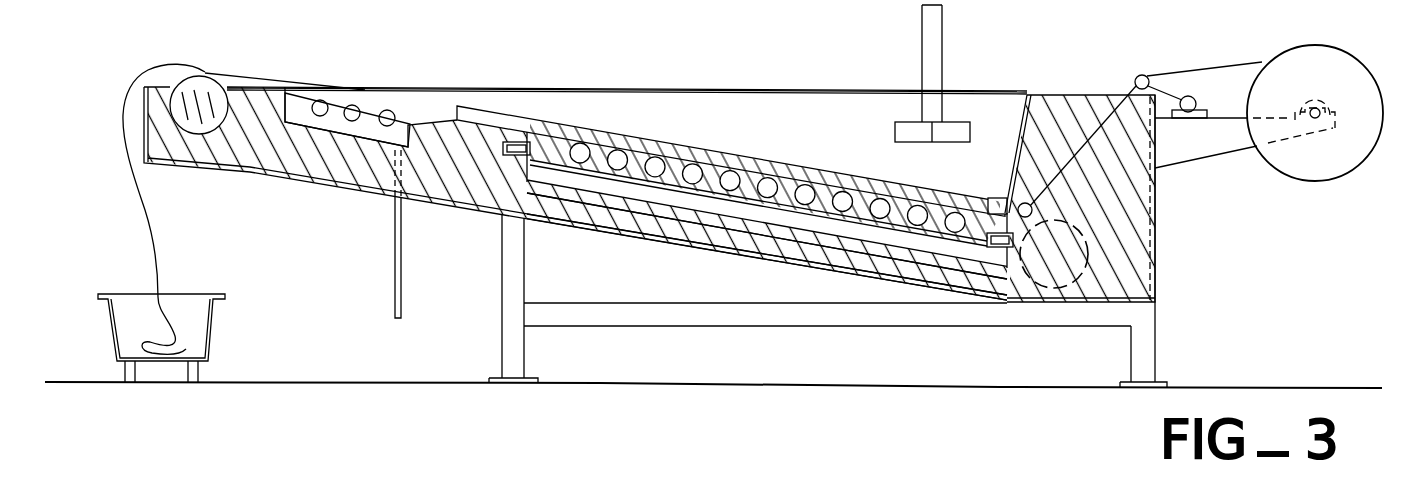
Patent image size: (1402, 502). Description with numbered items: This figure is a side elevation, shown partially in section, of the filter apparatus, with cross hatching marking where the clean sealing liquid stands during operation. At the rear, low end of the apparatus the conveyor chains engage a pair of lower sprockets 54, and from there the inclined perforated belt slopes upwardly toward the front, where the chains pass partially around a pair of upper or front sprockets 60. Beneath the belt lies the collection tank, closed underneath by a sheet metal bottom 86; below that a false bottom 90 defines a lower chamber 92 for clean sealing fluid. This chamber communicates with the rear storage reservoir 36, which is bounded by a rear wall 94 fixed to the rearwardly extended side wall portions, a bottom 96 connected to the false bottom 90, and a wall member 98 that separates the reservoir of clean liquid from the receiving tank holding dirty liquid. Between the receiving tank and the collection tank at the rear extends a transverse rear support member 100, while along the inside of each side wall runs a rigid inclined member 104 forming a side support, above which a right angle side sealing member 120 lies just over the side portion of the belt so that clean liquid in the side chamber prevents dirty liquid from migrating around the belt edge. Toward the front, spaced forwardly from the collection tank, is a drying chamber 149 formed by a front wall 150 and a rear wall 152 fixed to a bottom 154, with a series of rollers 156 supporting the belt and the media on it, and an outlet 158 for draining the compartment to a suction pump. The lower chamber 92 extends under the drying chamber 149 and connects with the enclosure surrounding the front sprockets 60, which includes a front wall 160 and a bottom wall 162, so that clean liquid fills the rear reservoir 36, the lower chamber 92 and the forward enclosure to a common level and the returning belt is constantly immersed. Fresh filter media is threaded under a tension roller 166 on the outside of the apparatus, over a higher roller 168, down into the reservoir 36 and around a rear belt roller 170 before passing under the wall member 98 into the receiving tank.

The rear storage reservoir 36 is at (1053, 120).
The lower sprockets 54 is at (1045, 235).
The upper or front sprockets 60 is at (208, 72).
The sheet metal bottom 86 is at (785, 233).
The false bottom 90 is at (712, 240).
The lower chamber 92 is at (642, 228).
The rear wall 94 is at (1157, 207).
The bottom 96 is at (1093, 305).
The wall member 98 is at (1017, 97).
The transverse rear support member 100 is at (932, 95).
The rigid inclined member 104 is at (600, 160).
The right angle side sealing members 120 is at (723, 162).
The drying chamber 149 is at (337, 107).
The front wall 150 is at (286, 105).
The rear wall 152 is at (627, 61).
The bottom 154 is at (363, 140).
The rollers 156 is at (320, 118).
The outlet 158 is at (393, 300).
The front wall 160 is at (143, 107).
The bottom wall 162 is at (192, 165).
The tension roller 166 is at (1191, 95).
The higher roller 168 is at (1144, 75).
The rear belt roller 170 is at (1019, 206).